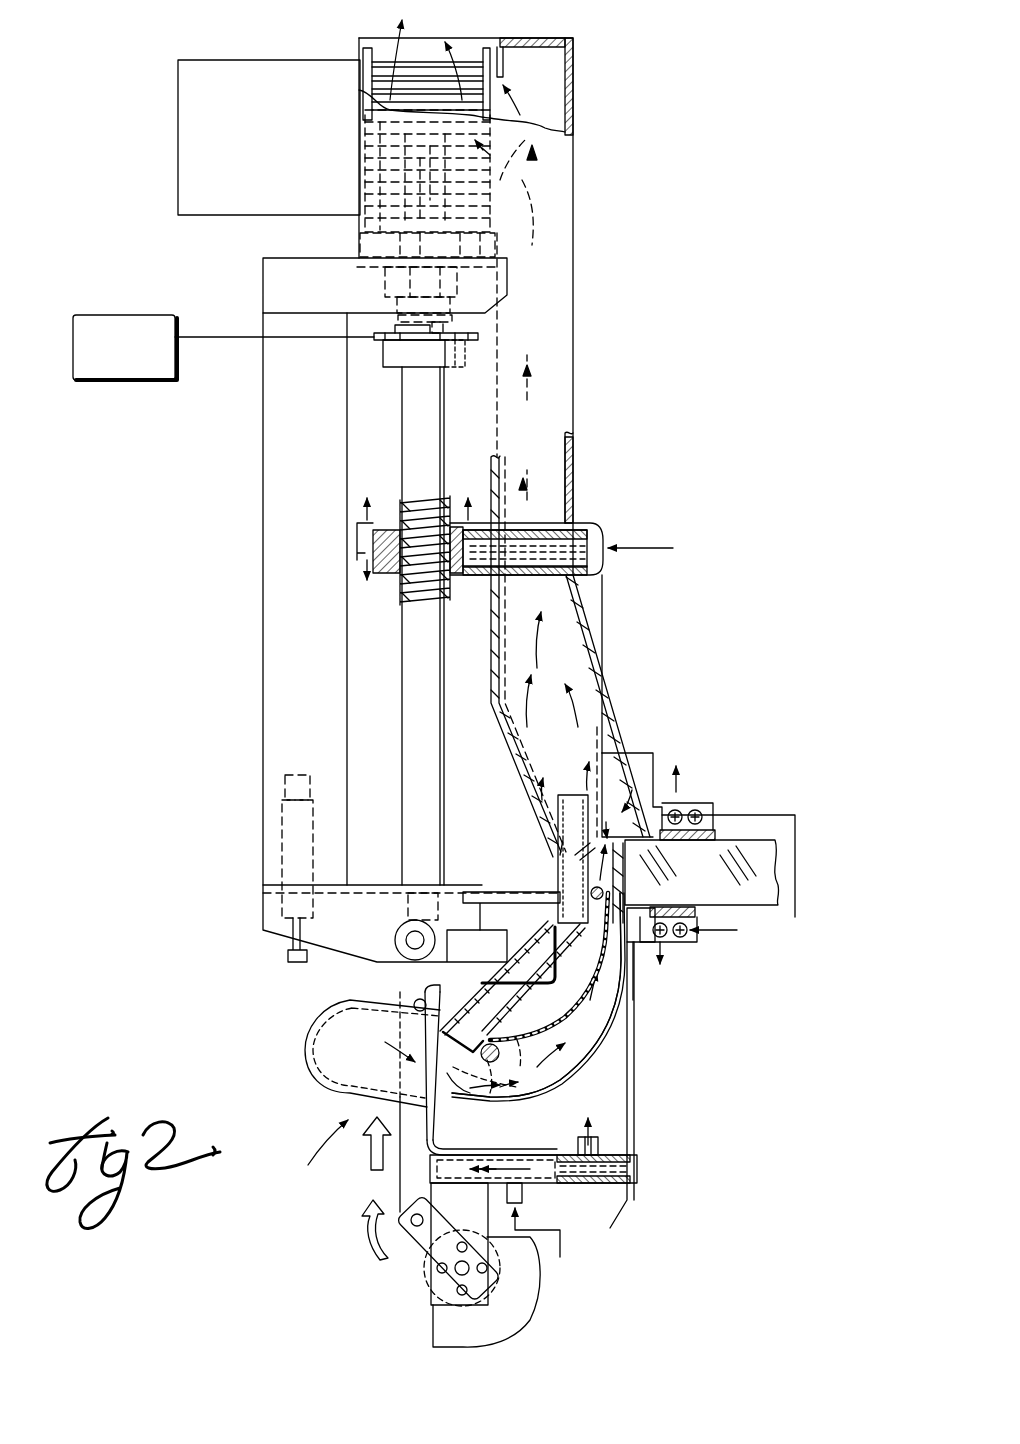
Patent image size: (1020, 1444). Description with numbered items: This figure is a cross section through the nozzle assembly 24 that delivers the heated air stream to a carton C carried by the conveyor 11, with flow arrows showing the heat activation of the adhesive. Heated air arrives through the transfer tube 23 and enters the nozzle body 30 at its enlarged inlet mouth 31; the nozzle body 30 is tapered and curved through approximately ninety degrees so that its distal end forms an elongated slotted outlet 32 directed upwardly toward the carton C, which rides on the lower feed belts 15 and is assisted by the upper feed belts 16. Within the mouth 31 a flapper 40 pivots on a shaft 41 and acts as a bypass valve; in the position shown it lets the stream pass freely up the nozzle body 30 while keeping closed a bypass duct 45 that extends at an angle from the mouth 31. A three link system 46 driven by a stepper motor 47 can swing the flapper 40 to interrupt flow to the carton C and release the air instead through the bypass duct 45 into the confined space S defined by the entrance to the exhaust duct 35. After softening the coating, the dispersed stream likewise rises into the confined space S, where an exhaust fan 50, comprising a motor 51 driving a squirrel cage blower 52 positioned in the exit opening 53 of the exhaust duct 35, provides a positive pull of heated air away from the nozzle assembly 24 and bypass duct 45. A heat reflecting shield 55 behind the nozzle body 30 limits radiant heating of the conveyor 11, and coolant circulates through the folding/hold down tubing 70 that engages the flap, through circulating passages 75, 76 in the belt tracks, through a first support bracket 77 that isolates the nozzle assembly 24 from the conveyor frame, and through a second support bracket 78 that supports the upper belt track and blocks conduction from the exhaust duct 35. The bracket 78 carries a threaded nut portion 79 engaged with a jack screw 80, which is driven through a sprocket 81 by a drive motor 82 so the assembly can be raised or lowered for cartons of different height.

The conveyor 11 is at (738, 740).
The lower feed belts 15 is at (687, 908).
The upper feed belts 16 is at (700, 836).
The transfer tube 23 is at (335, 1045).
The nozzle assembly 24 is at (616, 1070).
The nozzle body 30 is at (548, 1088).
The inlet mouth 31 is at (455, 1086).
The outlet 32 is at (598, 938).
The exhaust duct 35 is at (566, 285).
The flapper 40 is at (433, 1040).
The shaft 41 is at (491, 1063).
The bypass duct 45 is at (510, 1010).
The three link system 46 is at (565, 795).
The stepper motor 47 is at (425, 1290).
The exhaust fan 50 is at (285, 57).
The motor 51 is at (222, 208).
The squirrel cage blower 52 is at (428, 65).
The exit opening 53 is at (500, 55).
The heat reflecting shield 55 is at (636, 1014).
The folding/hold down tubing 70 is at (590, 892).
The circulating passage 75 is at (681, 942).
The circulating passage 76 is at (702, 808).
The first support bracket 77 is at (542, 1170).
The second support bracket 78 is at (479, 577).
The threaded nut portion 79 is at (393, 573).
The jack screw 80 is at (418, 500).
The sprocket 81 is at (395, 355).
The drive motor 82 is at (160, 374).
The carton C is at (690, 872).
The confined space S is at (622, 832).